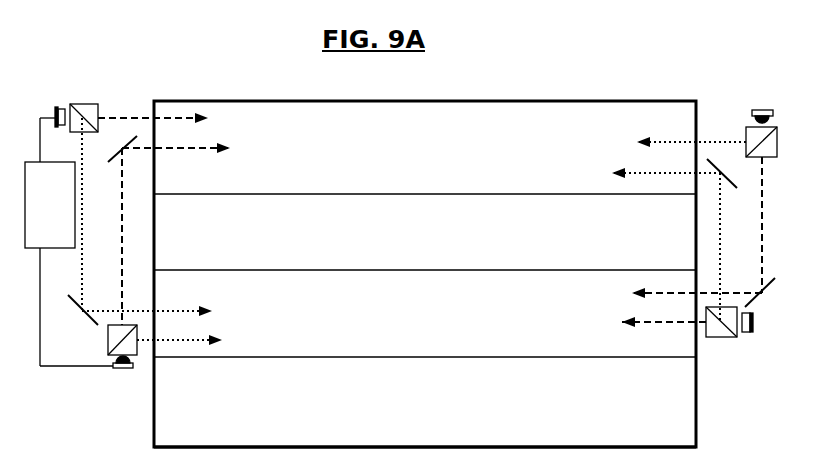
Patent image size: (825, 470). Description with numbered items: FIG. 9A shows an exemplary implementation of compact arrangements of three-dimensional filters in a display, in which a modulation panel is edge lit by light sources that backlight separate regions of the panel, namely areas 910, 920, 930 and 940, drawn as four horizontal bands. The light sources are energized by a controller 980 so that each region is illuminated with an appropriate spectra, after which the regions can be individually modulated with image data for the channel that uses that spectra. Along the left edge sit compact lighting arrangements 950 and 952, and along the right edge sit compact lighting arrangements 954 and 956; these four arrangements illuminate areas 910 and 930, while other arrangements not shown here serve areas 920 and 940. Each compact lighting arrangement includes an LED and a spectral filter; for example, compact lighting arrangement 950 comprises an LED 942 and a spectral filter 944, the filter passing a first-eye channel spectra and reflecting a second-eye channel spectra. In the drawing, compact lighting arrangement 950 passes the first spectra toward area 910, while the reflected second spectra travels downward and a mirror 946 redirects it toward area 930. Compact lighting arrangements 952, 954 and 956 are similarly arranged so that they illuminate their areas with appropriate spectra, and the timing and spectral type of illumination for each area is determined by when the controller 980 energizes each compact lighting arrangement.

The area of the modulation panel 910 is at (598, 192).
The area of the modulation panel 920 is at (598, 264).
The area of the modulation panel 930 is at (598, 354).
The area of the modulation panel 940 is at (598, 444).
The LED 942 is at (58, 103).
The spectral filter 944 is at (88, 108).
The mirror 946 is at (74, 310).
The compact lighting arrangement 950 is at (83, 108).
The compact lighting arrangement 952 is at (107, 346).
The compact lighting arrangement 954 is at (747, 133).
The compact lighting arrangement 956 is at (729, 334).
The controller 980 is at (69, 242).